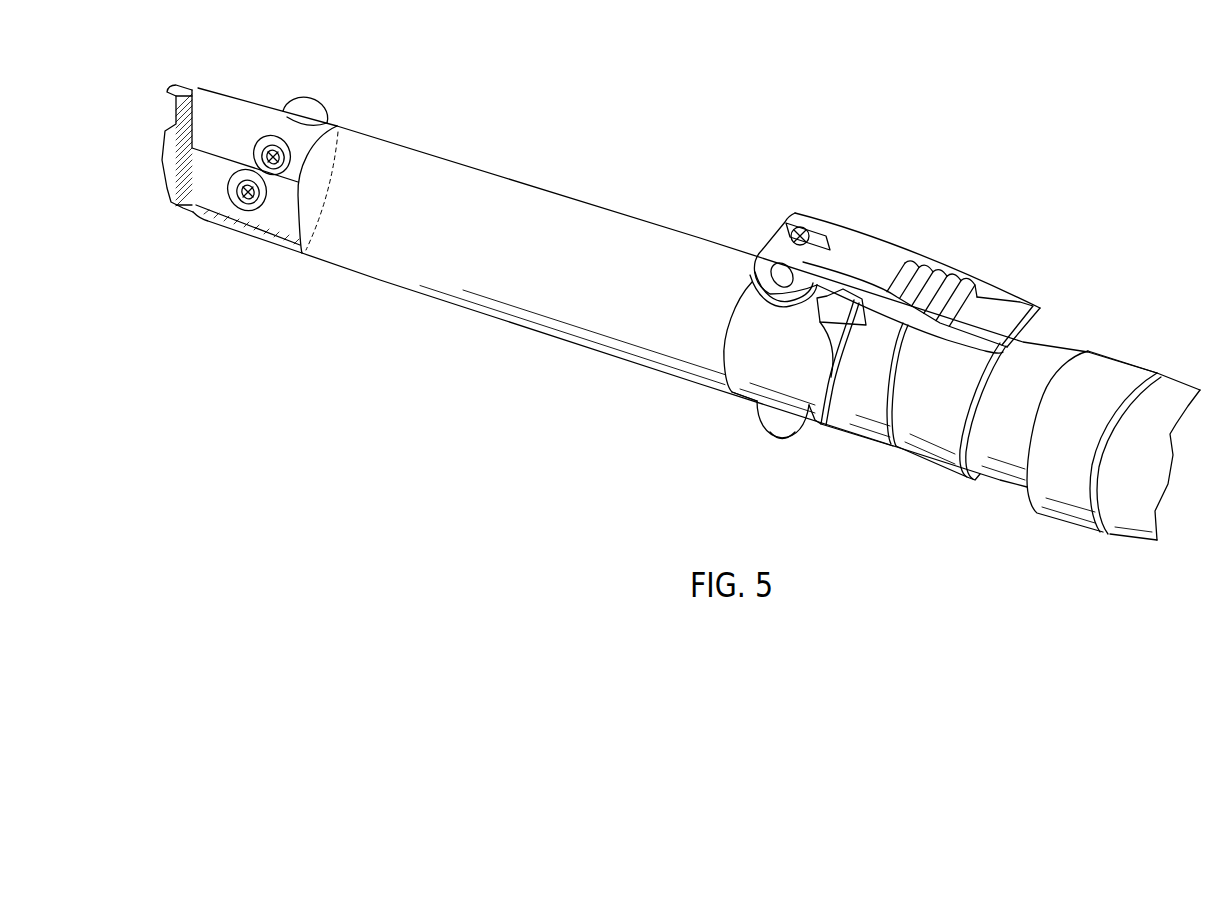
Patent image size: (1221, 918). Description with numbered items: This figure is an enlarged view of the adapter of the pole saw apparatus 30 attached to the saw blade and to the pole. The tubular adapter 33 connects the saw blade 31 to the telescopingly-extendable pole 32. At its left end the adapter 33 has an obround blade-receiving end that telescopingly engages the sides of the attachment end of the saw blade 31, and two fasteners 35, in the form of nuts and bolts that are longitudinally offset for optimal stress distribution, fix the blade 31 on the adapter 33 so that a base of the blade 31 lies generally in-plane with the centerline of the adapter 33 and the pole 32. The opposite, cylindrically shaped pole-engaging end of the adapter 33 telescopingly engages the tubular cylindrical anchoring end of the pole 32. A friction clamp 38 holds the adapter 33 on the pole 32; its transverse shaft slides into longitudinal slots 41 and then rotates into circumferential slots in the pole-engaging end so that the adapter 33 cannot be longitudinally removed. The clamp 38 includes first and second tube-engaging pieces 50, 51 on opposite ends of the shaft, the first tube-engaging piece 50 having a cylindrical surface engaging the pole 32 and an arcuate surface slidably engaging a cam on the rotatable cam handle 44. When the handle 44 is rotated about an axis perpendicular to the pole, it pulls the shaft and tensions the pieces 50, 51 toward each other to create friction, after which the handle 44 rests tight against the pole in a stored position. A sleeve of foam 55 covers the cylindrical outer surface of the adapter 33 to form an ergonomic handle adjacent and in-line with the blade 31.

The pole saw apparatus 30 is at (970, 142).
The saw blade 31 is at (184, 84).
The telescopingly-extendable pole 32 is at (1100, 364).
The tubular adapter 33 is at (652, 194).
The fasteners 35 is at (300, 98).
The friction clamp 38 is at (897, 272).
The longitudinal slots 41 is at (808, 432).
The rotatable cam handle 44 is at (924, 263).
The first tube-engaging piece 50 is at (847, 346).
The second tube-engaging piece 51 is at (750, 402).
The sleeve of foam 55 is at (567, 341).